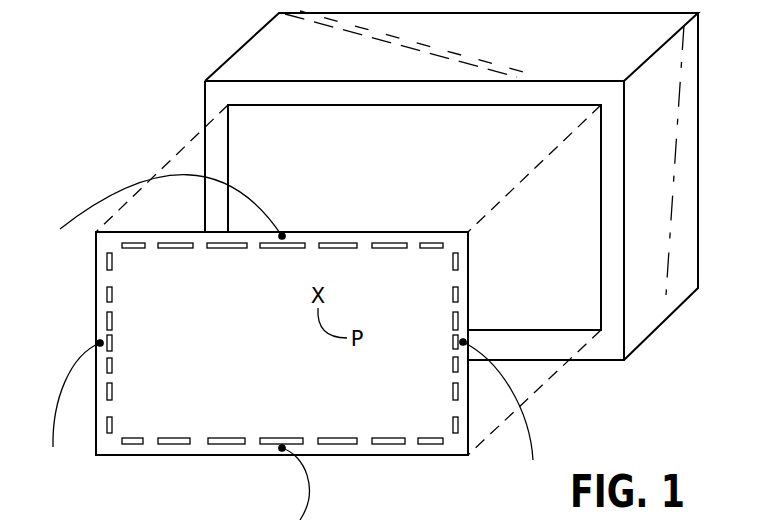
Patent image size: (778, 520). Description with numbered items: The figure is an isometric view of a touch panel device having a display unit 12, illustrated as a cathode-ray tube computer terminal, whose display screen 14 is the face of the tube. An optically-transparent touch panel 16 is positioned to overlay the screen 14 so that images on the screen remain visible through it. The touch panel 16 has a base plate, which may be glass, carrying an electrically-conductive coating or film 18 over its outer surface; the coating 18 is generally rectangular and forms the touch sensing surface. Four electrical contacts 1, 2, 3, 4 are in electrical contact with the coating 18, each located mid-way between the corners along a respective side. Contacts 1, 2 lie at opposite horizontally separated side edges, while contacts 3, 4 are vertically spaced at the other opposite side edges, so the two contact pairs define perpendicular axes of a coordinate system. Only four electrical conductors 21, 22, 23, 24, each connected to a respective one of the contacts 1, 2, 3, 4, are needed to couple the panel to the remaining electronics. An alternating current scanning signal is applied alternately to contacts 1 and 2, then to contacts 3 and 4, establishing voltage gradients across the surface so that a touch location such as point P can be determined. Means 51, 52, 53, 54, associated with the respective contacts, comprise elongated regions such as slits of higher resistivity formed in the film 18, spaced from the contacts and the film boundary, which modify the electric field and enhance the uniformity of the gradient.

The first electrical contact 1 is at (87, 333).
The second electrical contact 2 is at (472, 326).
The third electrical contact 3 is at (290, 221).
The fourth electrical contact 4 is at (278, 463).
The display unit 12 is at (687, 258).
The display screen 14 is at (588, 308).
The touch panel 16 is at (378, 462).
The electrically-conductive coating 18 is at (192, 425).
The first electrical conductor 21 is at (53, 437).
The second electrical conductor 22 is at (528, 442).
The third electrical conductor 23 is at (70, 220).
The fourth electrical conductor 24 is at (312, 488).
The field modifying means 51 is at (127, 343).
The field modifying means 52 is at (443, 338).
The field modifying means 53 is at (330, 260).
The field modifying means 54 is at (283, 423).